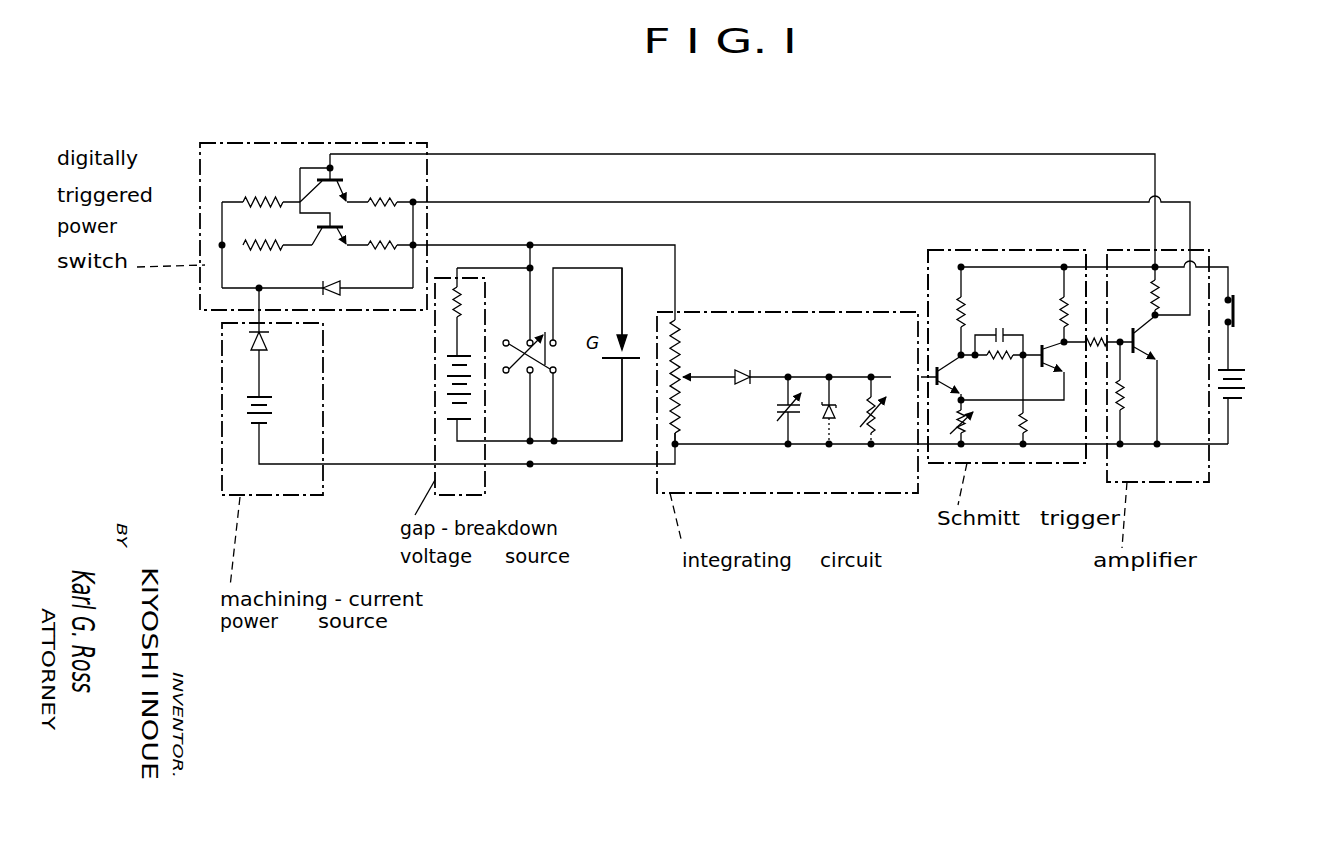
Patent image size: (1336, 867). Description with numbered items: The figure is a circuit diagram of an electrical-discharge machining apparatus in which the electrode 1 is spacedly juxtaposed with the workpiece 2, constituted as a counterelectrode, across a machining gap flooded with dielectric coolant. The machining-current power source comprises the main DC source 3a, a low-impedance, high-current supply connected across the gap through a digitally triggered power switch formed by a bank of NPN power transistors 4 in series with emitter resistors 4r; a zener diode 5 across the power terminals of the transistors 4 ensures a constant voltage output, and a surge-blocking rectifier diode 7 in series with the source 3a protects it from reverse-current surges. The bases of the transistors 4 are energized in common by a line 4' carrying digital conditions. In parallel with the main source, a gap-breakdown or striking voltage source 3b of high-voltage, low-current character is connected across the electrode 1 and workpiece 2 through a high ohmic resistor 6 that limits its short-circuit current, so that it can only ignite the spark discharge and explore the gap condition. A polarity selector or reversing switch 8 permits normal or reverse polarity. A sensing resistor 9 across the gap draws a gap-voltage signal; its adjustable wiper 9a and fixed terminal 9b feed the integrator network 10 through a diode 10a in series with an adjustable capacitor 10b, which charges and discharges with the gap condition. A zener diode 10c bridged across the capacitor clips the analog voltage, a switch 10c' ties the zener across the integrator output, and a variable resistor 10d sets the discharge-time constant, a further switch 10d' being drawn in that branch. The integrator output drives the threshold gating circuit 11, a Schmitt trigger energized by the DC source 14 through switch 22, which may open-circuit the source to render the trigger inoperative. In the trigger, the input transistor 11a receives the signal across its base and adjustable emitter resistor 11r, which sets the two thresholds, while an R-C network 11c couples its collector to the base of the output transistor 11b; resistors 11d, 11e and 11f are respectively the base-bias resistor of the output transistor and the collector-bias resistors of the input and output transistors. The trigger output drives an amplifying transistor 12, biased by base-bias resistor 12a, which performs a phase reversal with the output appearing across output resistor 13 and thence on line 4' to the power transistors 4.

The electrode 1 is at (624, 327).
The workpiece 2 is at (612, 363).
The main DC source 3a is at (270, 410).
The gap breakdown voltage source 3b is at (452, 410).
The NPN power transistor 4 is at (328, 201).
The line 4' is at (742, 197).
The emitter resistor 4r is at (385, 200).
The zener diode 5 is at (340, 285).
The high ohmic resistor 6 is at (454, 302).
The surge-blocking rectifier diode 7 is at (267, 342).
The polarity selector or reversing switch 8 is at (506, 333).
The sensing resistor 9 is at (672, 400).
The adjustable tap or wiper 9a is at (705, 377).
The fixed terminal 9b is at (677, 447).
The integrator network 10 is at (826, 337).
The diode 10a is at (745, 360).
The capacitor 10b is at (778, 408).
The zener diode 10c is at (845, 383).
The switch 10c' is at (826, 450).
The variable resistor 10d is at (888, 406).
The variable resistor connection 10d' is at (878, 458).
The threshold gating circuit 11 is at (975, 253).
The input transistor 11a is at (945, 374).
The output transistor 11b is at (1037, 366).
The R-C network 11c is at (1005, 334).
The base-bias resistor 11d is at (1026, 432).
The collector-bias resistor 11e is at (963, 307).
The collector-bias resistor 11f is at (1059, 303).
The emitter resistor 11r is at (966, 432).
The amplifying transistor 12 is at (1146, 340).
The base-bias resistor 12a is at (1137, 393).
The output resistor 13 is at (1150, 303).
The DC source 14 is at (1244, 394).
The switch 22 is at (1238, 309).